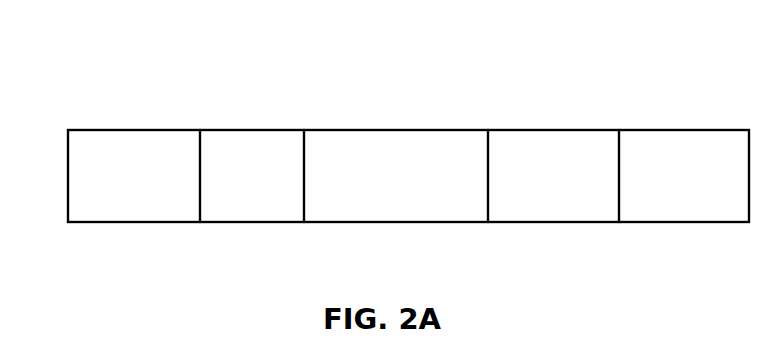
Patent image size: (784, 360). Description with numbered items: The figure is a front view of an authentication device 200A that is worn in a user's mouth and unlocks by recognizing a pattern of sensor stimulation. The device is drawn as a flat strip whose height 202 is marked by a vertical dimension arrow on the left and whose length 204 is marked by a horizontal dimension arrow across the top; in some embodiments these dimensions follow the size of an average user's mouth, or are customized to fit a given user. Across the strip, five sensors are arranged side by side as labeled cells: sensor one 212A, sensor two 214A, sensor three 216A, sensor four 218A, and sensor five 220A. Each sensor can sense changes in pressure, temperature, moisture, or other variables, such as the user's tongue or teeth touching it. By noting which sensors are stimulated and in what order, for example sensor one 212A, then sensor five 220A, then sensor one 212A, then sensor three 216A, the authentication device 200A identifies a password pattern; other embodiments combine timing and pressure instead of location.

The authentication device 200A is at (128, 42).
The height 202 is at (30, 131).
The length 204 is at (68, 105).
The sensor 1 212A is at (158, 173).
The sensor 2 214A is at (228, 173).
The sensor 3 216A is at (371, 173).
The sensor 4 218A is at (529, 173).
The sensor 5 220A is at (660, 173).